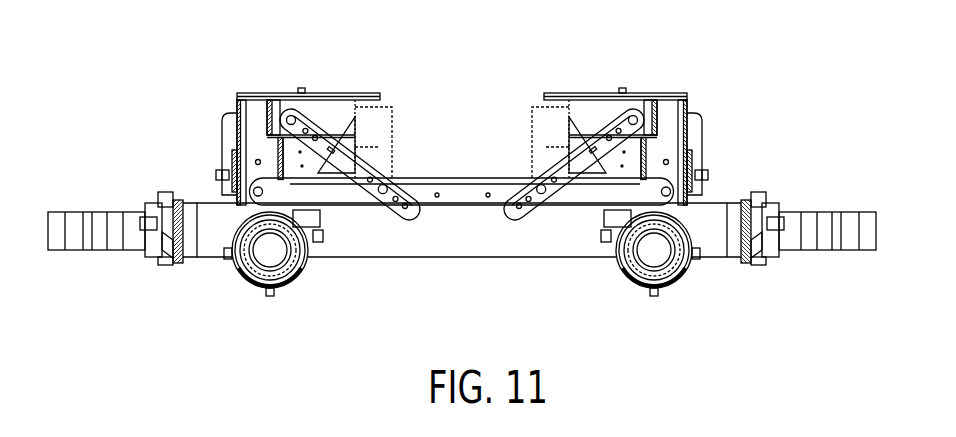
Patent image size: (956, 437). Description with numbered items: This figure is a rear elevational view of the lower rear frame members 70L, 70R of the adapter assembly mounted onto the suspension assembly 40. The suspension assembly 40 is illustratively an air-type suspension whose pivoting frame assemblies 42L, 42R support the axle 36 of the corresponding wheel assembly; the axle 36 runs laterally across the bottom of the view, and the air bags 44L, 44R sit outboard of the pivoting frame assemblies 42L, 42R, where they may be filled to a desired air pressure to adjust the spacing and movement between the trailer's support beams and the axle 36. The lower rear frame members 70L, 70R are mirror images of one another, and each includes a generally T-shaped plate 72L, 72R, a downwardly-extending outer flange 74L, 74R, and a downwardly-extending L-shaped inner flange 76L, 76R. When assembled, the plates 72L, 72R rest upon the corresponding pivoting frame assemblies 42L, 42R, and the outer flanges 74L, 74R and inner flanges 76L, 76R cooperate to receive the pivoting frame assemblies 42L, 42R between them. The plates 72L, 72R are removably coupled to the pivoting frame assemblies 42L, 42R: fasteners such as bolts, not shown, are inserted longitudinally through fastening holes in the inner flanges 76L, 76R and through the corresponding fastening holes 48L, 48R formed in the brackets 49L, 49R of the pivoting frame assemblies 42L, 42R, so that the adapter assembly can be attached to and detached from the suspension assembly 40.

The axle 36 is at (548, 252).
The suspension assembly 40 is at (235, 312).
The pivoting frame assembly 42L is at (247, 176).
The pivoting frame assembly 42R is at (680, 177).
The air bag 44L is at (225, 115).
The air bag 44R is at (700, 115).
The fastening hole 48L is at (316, 106).
The fastening hole 48R is at (603, 98).
The bracket 49L is at (358, 147).
The bracket 49R is at (543, 178).
The lower rear frame member 70L is at (253, 66).
The lower rear frame member 70R is at (672, 66).
The T-shaped plate 72L is at (376, 96).
The T-shaped plate 72R is at (548, 95).
The outer flange 74L is at (237, 100).
The outer flange 74R is at (690, 100).
The L-shaped inner flange 76L is at (270, 117).
The L-shaped inner flange 76R is at (653, 117).